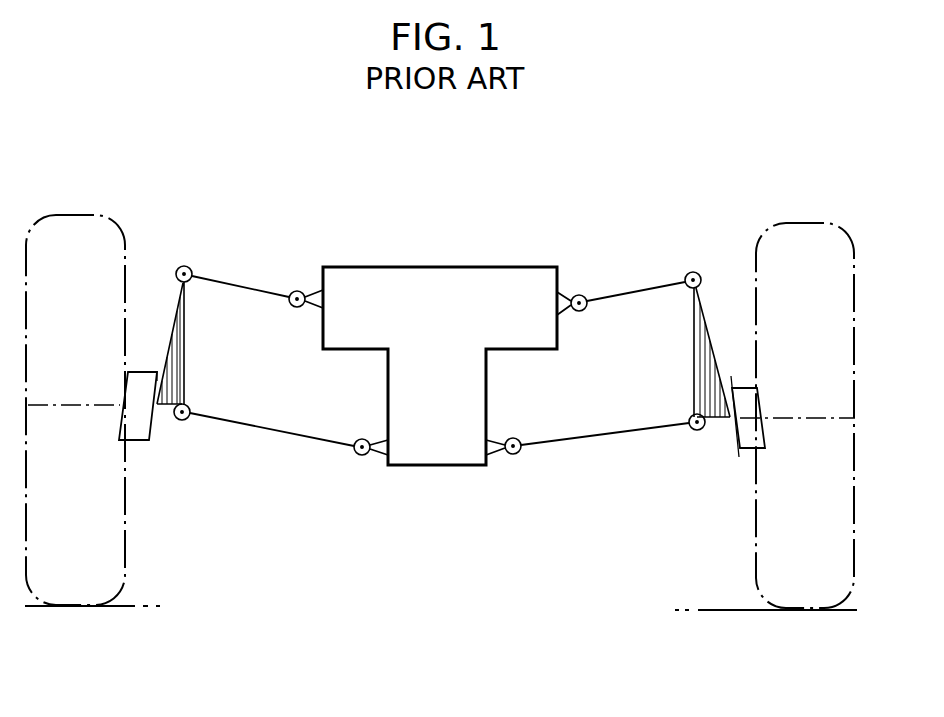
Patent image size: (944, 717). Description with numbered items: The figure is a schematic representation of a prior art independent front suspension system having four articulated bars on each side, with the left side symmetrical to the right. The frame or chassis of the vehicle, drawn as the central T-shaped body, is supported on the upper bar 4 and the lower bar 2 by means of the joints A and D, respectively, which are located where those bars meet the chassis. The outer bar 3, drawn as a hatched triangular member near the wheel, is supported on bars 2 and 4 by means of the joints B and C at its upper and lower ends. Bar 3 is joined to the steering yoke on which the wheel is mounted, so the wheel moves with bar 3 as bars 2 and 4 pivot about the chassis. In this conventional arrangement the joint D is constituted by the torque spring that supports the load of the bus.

The bar 2 is at (612, 437).
The bar 3 is at (706, 318).
The bar 4 is at (630, 288).
The joint A is at (579, 290).
The joint B is at (693, 268).
The joint C is at (699, 432).
The joint D is at (512, 458).